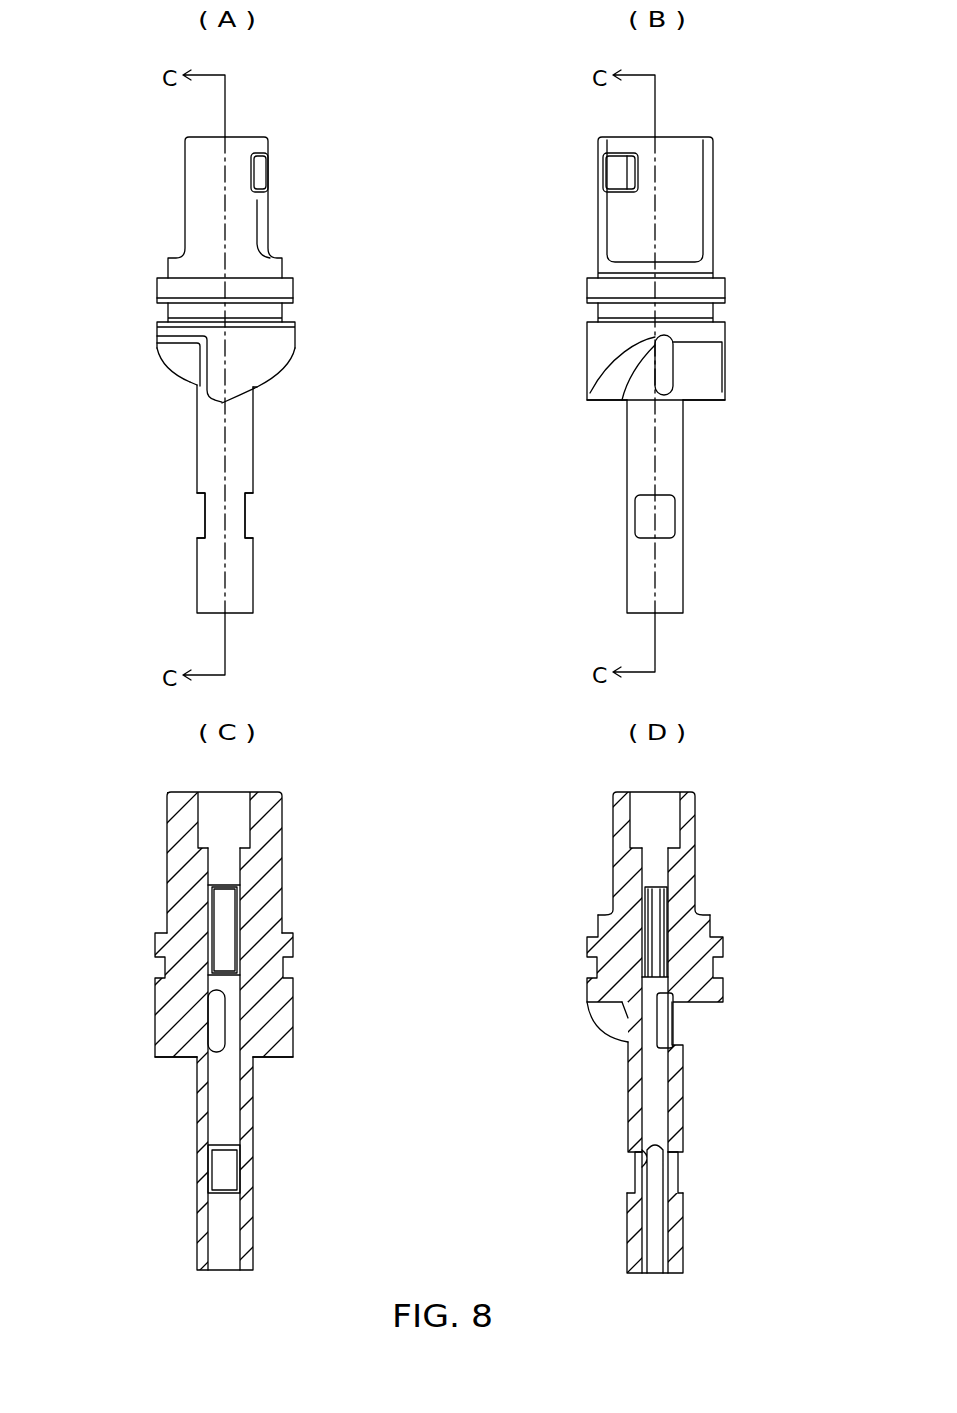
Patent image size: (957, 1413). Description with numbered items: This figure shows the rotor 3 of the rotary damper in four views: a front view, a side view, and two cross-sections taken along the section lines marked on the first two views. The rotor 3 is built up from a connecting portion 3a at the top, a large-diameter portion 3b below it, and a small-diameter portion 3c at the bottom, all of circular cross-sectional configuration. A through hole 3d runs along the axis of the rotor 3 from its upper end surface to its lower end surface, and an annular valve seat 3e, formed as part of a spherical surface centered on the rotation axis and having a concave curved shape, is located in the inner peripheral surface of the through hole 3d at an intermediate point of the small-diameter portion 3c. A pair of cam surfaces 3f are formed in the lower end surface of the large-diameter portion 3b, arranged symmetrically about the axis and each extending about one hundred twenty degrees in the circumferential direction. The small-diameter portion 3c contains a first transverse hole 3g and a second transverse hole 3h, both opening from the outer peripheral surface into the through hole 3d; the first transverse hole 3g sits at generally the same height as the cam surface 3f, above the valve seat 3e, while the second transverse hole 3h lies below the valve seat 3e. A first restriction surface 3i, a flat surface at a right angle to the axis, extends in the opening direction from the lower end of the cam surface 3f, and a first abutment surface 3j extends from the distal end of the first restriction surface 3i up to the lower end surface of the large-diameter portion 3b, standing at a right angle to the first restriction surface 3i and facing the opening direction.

The rotor 3 is at (271, 135).
The connecting portion 3a is at (204, 222).
The large-diameter portion 3b is at (158, 290).
The small-diameter portion 3c is at (197, 572).
The through hole 3d is at (222, 1107).
The valve seat 3e is at (228, 1152).
The cam surface 3f is at (265, 380).
The first transverse hole 3g is at (195, 372).
The second transverse hole 3h is at (198, 515).
The first restriction surface 3i is at (220, 400).
The first abutment surface 3j is at (200, 365).